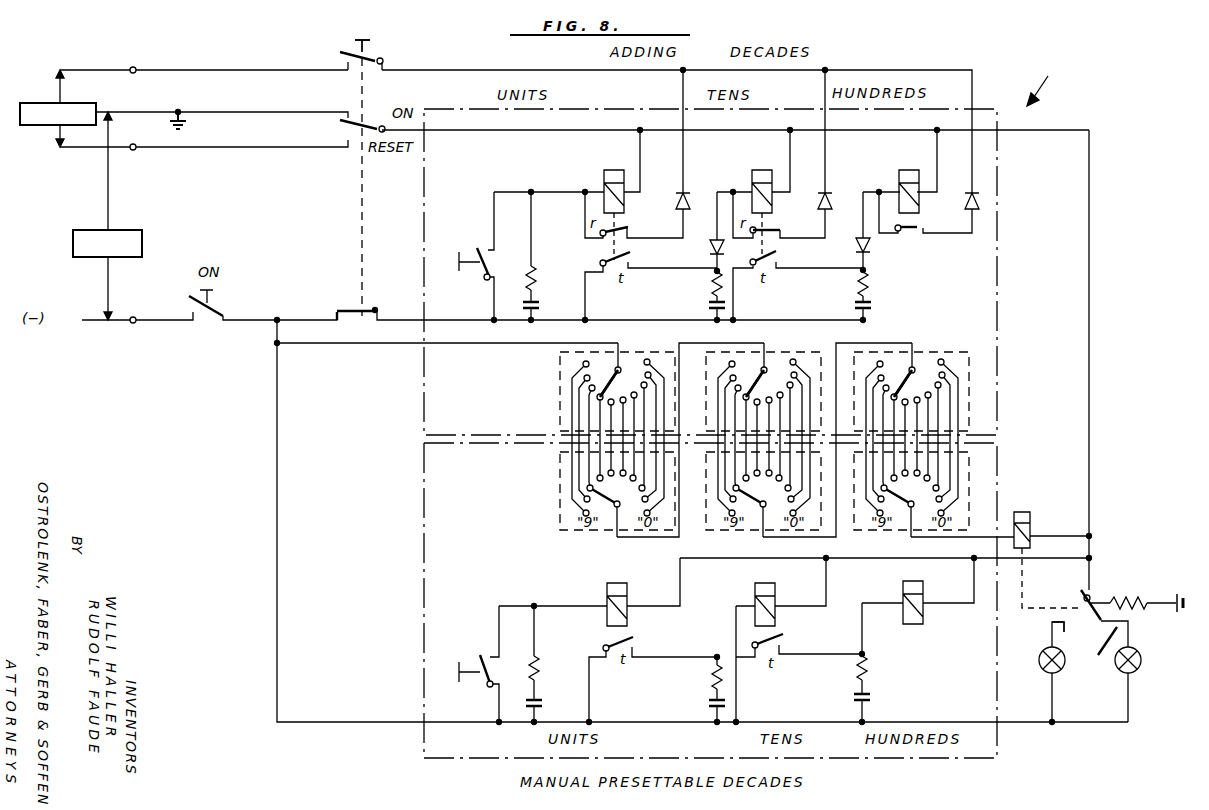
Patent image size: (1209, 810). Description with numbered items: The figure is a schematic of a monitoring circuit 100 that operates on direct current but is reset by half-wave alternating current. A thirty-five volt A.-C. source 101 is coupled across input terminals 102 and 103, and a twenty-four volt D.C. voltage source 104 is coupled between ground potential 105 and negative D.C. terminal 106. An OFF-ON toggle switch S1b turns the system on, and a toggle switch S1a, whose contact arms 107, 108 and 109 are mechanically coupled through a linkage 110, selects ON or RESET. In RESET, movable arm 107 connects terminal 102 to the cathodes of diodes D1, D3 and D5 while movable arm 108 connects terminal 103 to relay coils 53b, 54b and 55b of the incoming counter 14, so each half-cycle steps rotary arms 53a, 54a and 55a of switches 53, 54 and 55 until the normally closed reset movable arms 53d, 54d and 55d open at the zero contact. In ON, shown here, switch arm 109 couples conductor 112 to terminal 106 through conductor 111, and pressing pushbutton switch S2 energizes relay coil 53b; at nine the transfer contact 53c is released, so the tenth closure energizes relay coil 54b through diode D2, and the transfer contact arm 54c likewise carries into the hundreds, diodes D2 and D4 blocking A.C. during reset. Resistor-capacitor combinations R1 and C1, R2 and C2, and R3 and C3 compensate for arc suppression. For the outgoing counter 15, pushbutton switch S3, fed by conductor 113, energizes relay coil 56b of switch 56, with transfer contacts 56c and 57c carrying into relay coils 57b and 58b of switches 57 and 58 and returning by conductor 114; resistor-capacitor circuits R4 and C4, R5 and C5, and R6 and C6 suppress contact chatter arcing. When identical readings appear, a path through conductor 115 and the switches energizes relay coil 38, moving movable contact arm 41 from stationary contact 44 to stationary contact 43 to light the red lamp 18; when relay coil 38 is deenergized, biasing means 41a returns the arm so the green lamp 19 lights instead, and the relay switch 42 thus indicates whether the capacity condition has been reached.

The monitoring circuit 100 is at (1075, 70).
The A.-C. source 101 is at (44, 101).
The input terminal 102 is at (136, 67).
The input terminal 103 is at (134, 150).
The D.C. voltage source 104 is at (73, 238).
The ground potential 105 is at (190, 130).
The negative D.C. terminal 106 is at (136, 317).
The movable arm 107 is at (347, 57).
The movable arm 108 is at (345, 126).
The movable arm 109 is at (352, 306).
The linkage 110 is at (360, 200).
The conductor 111 is at (292, 313).
The conductor 112 is at (507, 322).
The conductor 113 is at (277, 606).
The conductor 114 is at (1090, 389).
The conductor 115 is at (373, 345).
The incoming counter 14 is at (998, 267).
The outgoing counter 15 is at (998, 466).
The relay coil 38 is at (1030, 519).
The relay switch 42 is at (1105, 587).
The biasing means 41a is at (1136, 599).
The movable contact arm 41 is at (1104, 613).
The stationary contact 43 is at (1071, 635).
The stationary contact 44 is at (1099, 654).
The red lamp 18 is at (1028, 647).
The green lamp 19 is at (1196, 639).
The switch 53 is at (629, 352).
The rotary arm 53a is at (608, 386).
The relay coil 53b is at (618, 160).
The transfer contact 53c is at (600, 258).
The reset movable arm 53d is at (626, 228).
The switch 54 is at (812, 354).
The rotary arm 54a is at (756, 385).
The relay coil 54b is at (768, 169).
The transfer contact arm 54c is at (786, 276).
The reset movable arm 54d is at (778, 229).
The switch 55 is at (956, 352).
The rotary arm 55a is at (902, 382).
The relay coil 55b is at (906, 169).
The reset movable arm 55d is at (918, 227).
The switch 56 is at (593, 532).
The relay coil 56b is at (606, 586).
The transfer contact 56c is at (612, 636).
The switch 57 is at (742, 532).
The relay coil 57b is at (755, 586).
The transfer contact 57c is at (760, 641).
The switch 58 is at (890, 534).
The relay coil 58b is at (903, 586).
The toggle switch S1a is at (365, 30).
The toggle switch S1b is at (206, 319).
The pushbutton switch S2 is at (460, 264).
The pushbutton switch S3 is at (462, 671).
The diode D1 is at (690, 199).
The diode D2 is at (709, 247).
The diode D3 is at (832, 200).
The diode D4 is at (870, 247).
The diode D5 is at (964, 198).
The resistor R1 is at (545, 278).
The resistor R2 is at (711, 285).
The resistor R3 is at (869, 282).
The resistor R4 is at (547, 668).
The resistor R5 is at (711, 674).
The resistor R6 is at (869, 668).
The capacitor C1 is at (545, 304).
The capacitor C2 is at (708, 303).
The capacitor C3 is at (874, 305).
The capacitor C4 is at (550, 701).
The capacitor C5 is at (709, 703).
The capacitor C6 is at (872, 697).